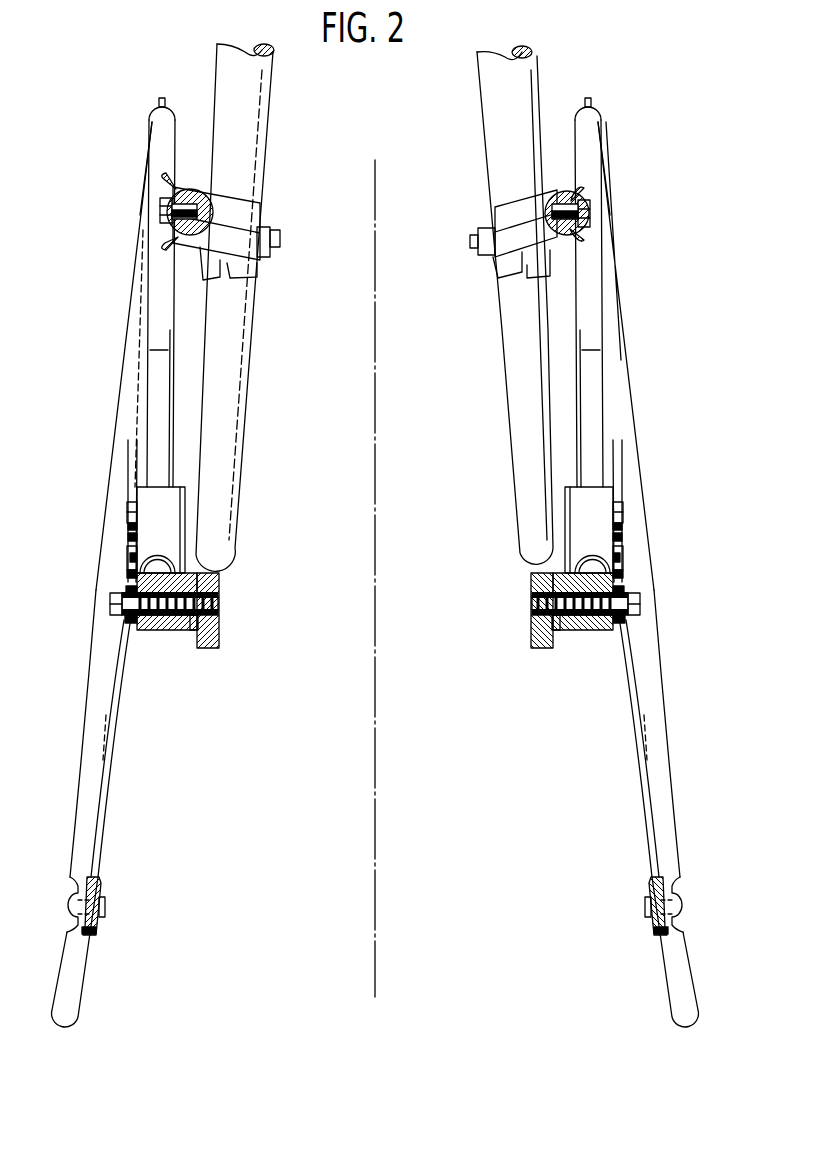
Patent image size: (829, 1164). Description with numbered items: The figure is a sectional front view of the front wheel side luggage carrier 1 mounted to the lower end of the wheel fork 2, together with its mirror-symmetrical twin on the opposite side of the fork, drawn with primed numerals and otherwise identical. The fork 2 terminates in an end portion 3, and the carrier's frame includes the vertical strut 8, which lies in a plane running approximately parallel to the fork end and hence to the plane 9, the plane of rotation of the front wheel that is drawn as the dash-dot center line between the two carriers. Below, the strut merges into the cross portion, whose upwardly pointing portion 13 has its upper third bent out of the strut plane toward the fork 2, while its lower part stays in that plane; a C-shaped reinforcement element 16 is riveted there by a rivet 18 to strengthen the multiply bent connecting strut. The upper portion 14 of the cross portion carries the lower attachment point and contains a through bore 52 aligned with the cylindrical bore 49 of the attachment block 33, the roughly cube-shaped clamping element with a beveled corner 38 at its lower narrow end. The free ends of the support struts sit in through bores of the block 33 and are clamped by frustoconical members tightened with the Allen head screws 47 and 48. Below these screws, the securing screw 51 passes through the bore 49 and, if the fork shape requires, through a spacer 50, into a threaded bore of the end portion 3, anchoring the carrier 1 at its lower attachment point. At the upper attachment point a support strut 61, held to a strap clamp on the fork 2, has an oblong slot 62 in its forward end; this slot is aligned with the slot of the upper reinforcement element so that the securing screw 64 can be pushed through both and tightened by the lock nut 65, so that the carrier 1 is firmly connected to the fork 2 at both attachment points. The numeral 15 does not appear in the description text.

The front wheel side luggage carrier 1 is at (122, 185).
The wheel fork 2 is at (236, 490).
The end portion 3 is at (215, 650).
The vertical strut 8 is at (115, 420).
The plane 9 is at (375, 722).
The upwardly pointing portion 13 is at (70, 830).
The upper portion of the cross portion 14 is at (120, 590).
The leg inner strip 15 is at (92, 705).
The reinforcement element 16 is at (100, 884).
The rivet 18 is at (68, 905).
The attachment block 33 is at (148, 497).
The beveled corner 38 is at (125, 577).
The Allen head screw 47 is at (130, 553).
The Allen head screw 48 is at (133, 508).
The cylindrical bore 49 is at (165, 633).
The spacer 50 is at (194, 633).
The securing screw 51 is at (225, 600).
The through bore 52 is at (134, 625).
The support strut 61 is at (250, 210).
The oblong slot 62 is at (568, 190).
The securing screw 64 is at (165, 210).
The lock nut 65 is at (200, 236).